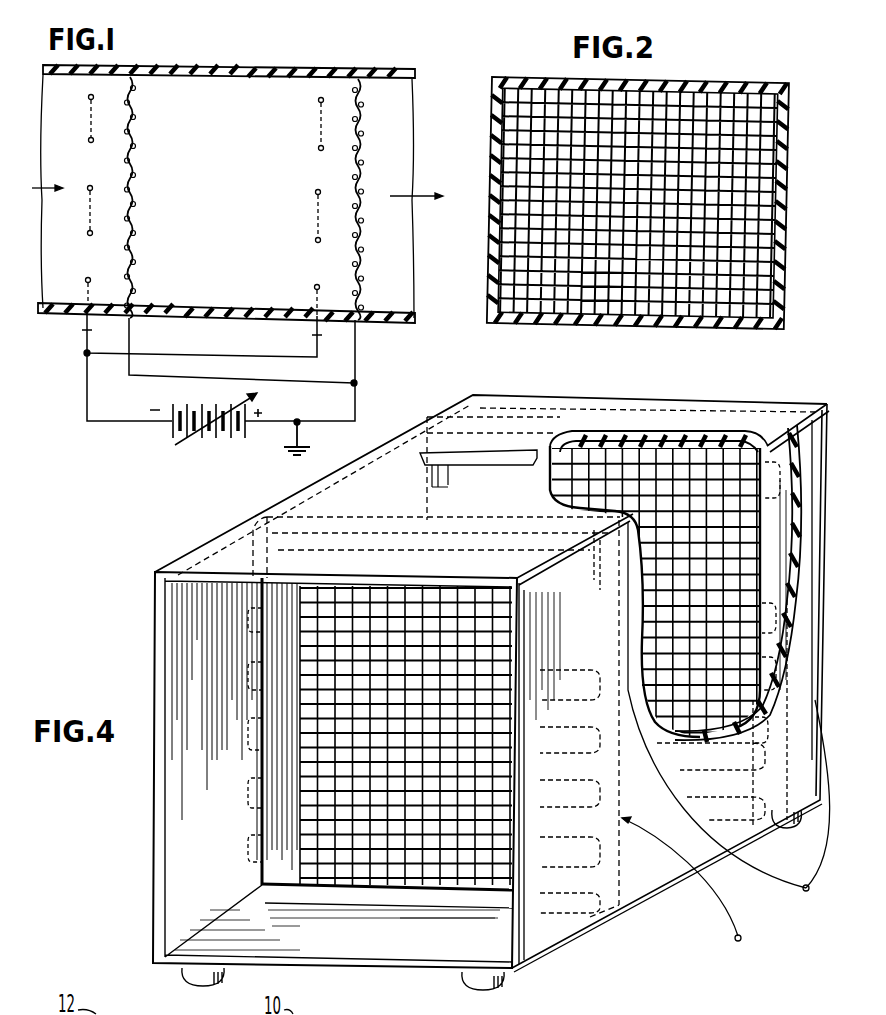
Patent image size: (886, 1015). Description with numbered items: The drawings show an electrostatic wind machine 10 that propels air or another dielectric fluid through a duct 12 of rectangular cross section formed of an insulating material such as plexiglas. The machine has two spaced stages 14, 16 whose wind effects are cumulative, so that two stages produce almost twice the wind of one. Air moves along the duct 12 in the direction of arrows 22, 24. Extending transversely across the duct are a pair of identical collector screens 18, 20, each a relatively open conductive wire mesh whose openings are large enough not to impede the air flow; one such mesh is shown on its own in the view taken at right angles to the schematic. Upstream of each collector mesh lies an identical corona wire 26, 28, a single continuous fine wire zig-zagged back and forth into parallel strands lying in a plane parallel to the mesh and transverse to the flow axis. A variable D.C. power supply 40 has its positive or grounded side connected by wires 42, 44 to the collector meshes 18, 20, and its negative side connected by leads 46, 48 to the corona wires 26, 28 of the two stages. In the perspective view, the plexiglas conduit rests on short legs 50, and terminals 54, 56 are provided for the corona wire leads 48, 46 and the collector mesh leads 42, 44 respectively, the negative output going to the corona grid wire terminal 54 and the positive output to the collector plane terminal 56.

In FIG. 1, the wind machine 10 is at (246, 62).
In FIG. 2, the wind machine 10 is at (716, 78).
In FIG. 4, the wind machine 10 is at (138, 551).
In FIG. 1, the duct 12 is at (314, 66).
In FIG. 2, the duct 12 is at (545, 78).
In FIG. 4, the duct 12 is at (218, 545).
In FIG. 1, the first stage 14 is at (76, 139).
In FIG. 4, the first stage 14 is at (242, 767).
In FIG. 1, the second stage 16 is at (285, 141).
In FIG. 4, the second stage 16 is at (661, 476).
In FIG. 1, the collector screen 18 is at (133, 133).
In FIG. 2, the collector screen 18 is at (760, 168).
In FIG. 4, the collector screen 18 is at (300, 728).
In FIG. 1, the collector screen 20 is at (366, 138).
In FIG. 4, the collector screen 20 is at (745, 628).
In FIG. 1, the air flow arrow 22 is at (47, 188).
In FIG. 1, the air flow arrow 24 is at (422, 195).
In FIG. 1, the corona wire 26 is at (88, 235).
In FIG. 4, the corona wire 26 is at (268, 824).
In FIG. 1, the corona wire 28 is at (316, 194).
In FIG. 4, the corona wire 28 is at (745, 492).
In FIG. 1, the variable D.C. power supply 40 is at (196, 445).
In FIG. 1, the wire 42 is at (355, 420).
In FIG. 4, the wire 42 is at (800, 708).
In FIG. 1, the wire 44 is at (296, 383).
In FIG. 4, the wire 44 is at (670, 853).
In FIG. 1, the lead 46 is at (86, 398).
In FIG. 4, the lead 46 is at (592, 588).
In FIG. 1, the lead 48 is at (245, 356).
In FIG. 4, the lead 48 is at (768, 490).
In FIG. 4, the legs 50 is at (490, 986).
In FIG. 4, the terminal 54 is at (789, 898).
In FIG. 4, the terminal 56 is at (739, 941).